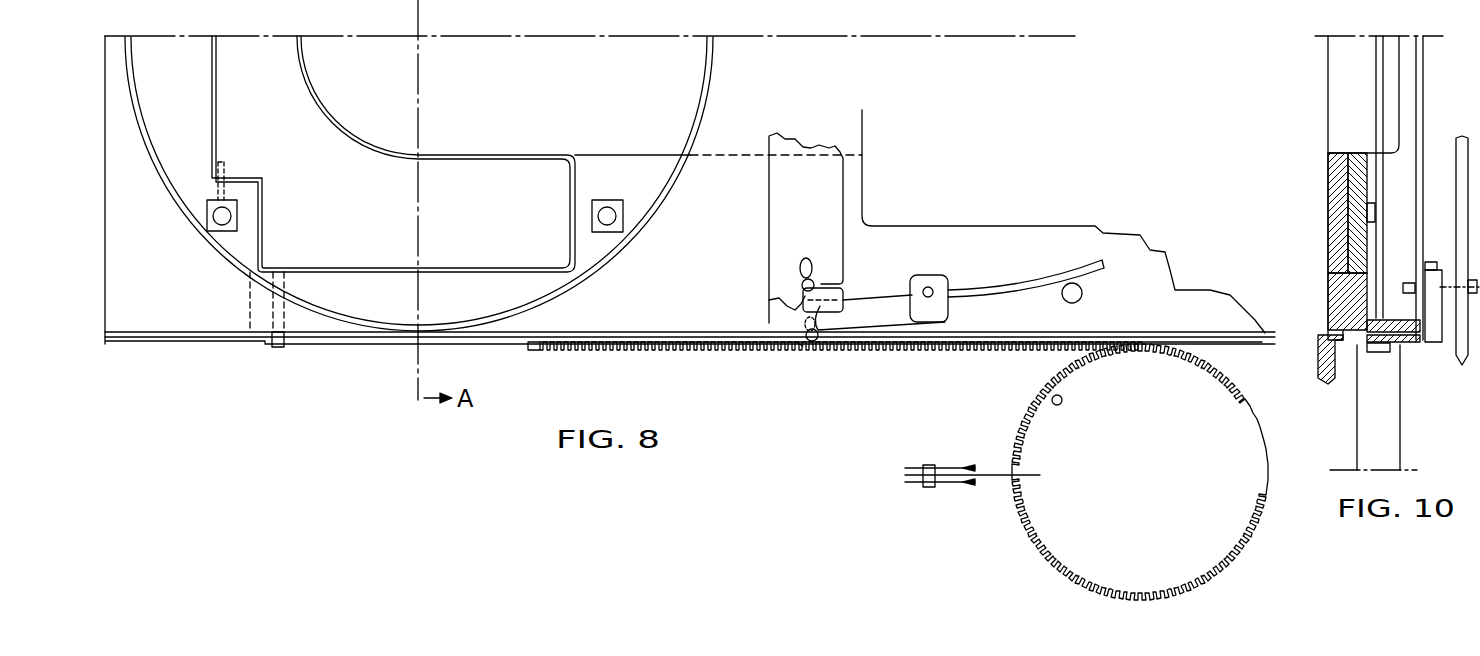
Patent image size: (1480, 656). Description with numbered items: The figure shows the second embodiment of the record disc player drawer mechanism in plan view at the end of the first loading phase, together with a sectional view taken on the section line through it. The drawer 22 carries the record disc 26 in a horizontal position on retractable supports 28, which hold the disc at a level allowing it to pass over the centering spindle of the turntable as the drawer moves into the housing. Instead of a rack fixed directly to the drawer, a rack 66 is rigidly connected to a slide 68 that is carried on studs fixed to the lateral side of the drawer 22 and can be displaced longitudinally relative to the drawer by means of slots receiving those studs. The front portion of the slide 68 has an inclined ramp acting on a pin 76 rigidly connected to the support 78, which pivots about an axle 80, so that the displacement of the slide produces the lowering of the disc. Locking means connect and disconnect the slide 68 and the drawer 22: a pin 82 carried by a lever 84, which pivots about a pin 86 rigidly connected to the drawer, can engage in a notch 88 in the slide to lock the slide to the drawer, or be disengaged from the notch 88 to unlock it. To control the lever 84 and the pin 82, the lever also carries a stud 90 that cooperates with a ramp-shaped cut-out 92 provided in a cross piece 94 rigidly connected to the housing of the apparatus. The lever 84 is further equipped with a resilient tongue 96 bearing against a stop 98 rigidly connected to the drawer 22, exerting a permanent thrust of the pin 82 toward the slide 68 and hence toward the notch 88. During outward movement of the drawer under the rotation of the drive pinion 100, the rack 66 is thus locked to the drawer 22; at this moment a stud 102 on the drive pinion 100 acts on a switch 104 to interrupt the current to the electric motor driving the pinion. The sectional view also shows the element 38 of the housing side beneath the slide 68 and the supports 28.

In FIG. 8, the drawer 22 is at (227, 343).
In FIG. 10, the drawer 22 is at (1326, 263).
In FIG. 8, the record disc 26 is at (688, 78).
In FIG. 10, the record disc 26 is at (1376, 93).
In FIG. 8, the retractable supports 28 is at (219, 228).
In FIG. 10, the retractable supports 28 is at (1367, 212).
In FIG. 10, the guide block 38 is at (1323, 360).
In FIG. 8, the rack 66 is at (596, 352).
In FIG. 10, the rack 66 is at (1378, 353).
In FIG. 8, the slide 68 is at (504, 346).
In FIG. 10, the slide 68 is at (1405, 340).
In FIG. 8, the pin 76 is at (278, 349).
In FIG. 8, the support 78 is at (510, 185).
In FIG. 10, the support 78 is at (1355, 180).
In FIG. 8, the axle 80 is at (215, 190).
In FIG. 8, the pin 82 is at (814, 343).
In FIG. 8, the lever 84 is at (890, 310).
In FIG. 10, the lever 84 is at (1437, 335).
In FIG. 8, the pin 86 is at (940, 284).
In FIG. 8, the notch 88 is at (797, 343).
In FIG. 8, the stud 90 is at (803, 302).
In FIG. 10, the stud 90 is at (1470, 280).
In FIG. 8, the cut-out 92 is at (818, 291).
In FIG. 8, the cross piece 94 is at (770, 224).
In FIG. 10, the cross piece 94 is at (1462, 180).
In FIG. 8, the resilient tongue 96 is at (1050, 283).
In FIG. 8, the stop 98 is at (1078, 300).
In FIG. 8, the drive pinion 100 is at (1238, 439).
In FIG. 10, the drive pinion 100 is at (1392, 424).
In FIG. 8, the stud 102 is at (1061, 404).
In FIG. 8, the switch 104 is at (926, 489).